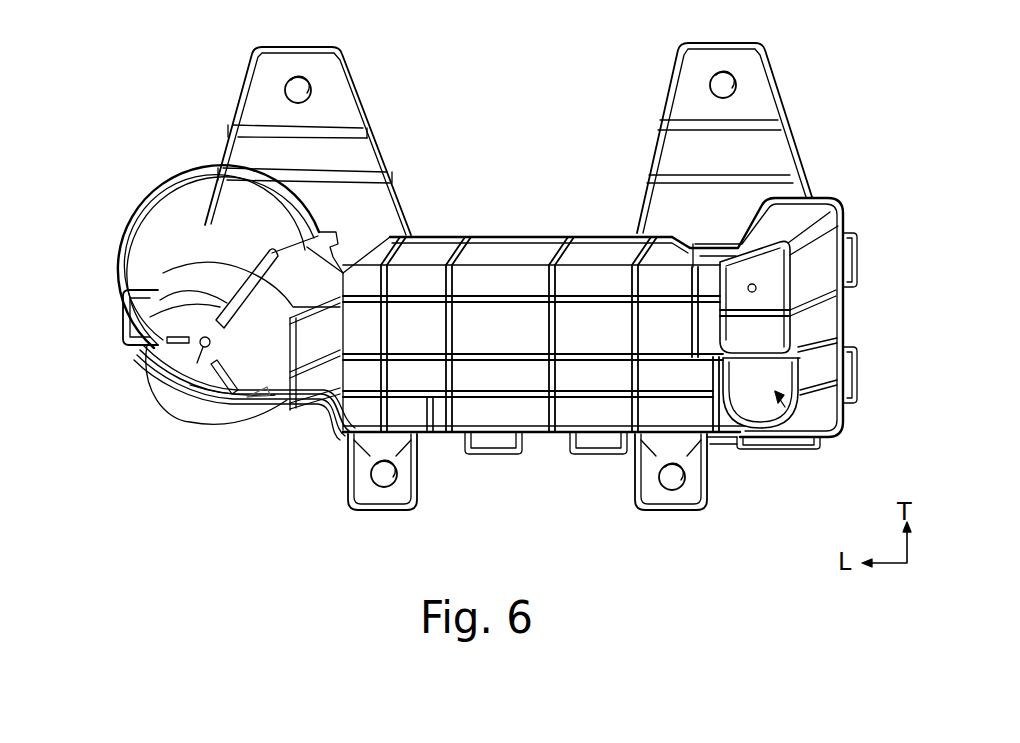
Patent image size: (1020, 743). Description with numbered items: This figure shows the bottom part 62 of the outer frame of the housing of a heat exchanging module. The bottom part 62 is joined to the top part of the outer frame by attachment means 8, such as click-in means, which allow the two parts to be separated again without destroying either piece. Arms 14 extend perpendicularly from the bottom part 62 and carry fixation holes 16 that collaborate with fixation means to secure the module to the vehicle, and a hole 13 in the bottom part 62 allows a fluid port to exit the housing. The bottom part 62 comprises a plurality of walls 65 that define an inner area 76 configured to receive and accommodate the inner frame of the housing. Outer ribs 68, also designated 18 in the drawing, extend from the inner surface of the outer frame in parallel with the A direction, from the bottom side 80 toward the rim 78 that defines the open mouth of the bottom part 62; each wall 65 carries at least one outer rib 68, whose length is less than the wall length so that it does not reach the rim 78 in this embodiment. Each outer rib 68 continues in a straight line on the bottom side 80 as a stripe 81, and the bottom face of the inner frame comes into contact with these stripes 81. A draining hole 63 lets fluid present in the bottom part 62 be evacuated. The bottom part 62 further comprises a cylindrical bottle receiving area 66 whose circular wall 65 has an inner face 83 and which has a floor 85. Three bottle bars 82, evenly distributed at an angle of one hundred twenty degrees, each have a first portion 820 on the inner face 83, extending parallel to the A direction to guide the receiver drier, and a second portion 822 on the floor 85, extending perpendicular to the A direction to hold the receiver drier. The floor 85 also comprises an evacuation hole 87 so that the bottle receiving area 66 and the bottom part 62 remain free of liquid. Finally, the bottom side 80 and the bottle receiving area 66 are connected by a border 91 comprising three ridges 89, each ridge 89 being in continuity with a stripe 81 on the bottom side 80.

The attachment means 8 is at (860, 377).
The hole 13 is at (800, 440).
The arm 14 is at (253, 153).
The fixation hole 16 is at (289, 92).
The reinforcing rib 18 is at (450, 247).
The bottom part 62 is at (140, 275).
The draining hole 63 is at (842, 225).
The wall 65 is at (593, 243).
The bottle receiving area 66 is at (183, 298).
The outer rib 68 is at (602, 321).
The inner area 76 is at (850, 342).
The rim 78 is at (503, 232).
The bottom side 80 is at (763, 445).
The stripe 81 is at (535, 296).
The bottle bar 82 is at (143, 352).
The inner face 83 is at (218, 258).
The floor 85 is at (210, 390).
The evacuation hole 87 is at (177, 382).
The ridge 89 is at (323, 455).
The border 91 is at (307, 337).
The first portion 820 is at (270, 258).
The second portion 822 is at (225, 303).